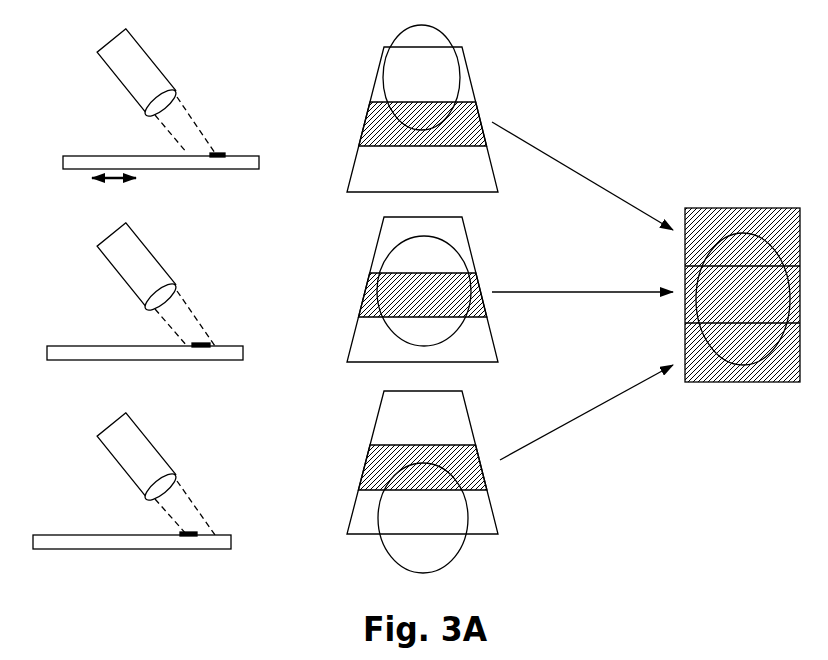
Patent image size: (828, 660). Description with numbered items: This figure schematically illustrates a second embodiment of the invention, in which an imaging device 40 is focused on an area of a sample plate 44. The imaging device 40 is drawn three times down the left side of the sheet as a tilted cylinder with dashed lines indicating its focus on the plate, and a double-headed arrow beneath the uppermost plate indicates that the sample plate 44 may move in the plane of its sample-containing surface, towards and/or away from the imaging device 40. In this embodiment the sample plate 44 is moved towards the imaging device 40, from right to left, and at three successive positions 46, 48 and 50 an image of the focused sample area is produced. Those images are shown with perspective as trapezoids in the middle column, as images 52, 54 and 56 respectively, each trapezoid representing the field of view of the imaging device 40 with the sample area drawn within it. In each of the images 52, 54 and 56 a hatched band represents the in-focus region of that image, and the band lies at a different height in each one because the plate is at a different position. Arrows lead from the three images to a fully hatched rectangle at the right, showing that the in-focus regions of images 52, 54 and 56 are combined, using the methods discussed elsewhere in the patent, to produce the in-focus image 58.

The imaging device 40 is at (142, 15).
The sample plate 44 is at (230, 163).
The position 46 is at (90, 79).
The position 48 is at (90, 275).
The position 50 is at (90, 463).
The image 52 is at (347, 107).
The image 54 is at (347, 293).
The image 56 is at (347, 475).
The in-focus image 58 is at (743, 383).